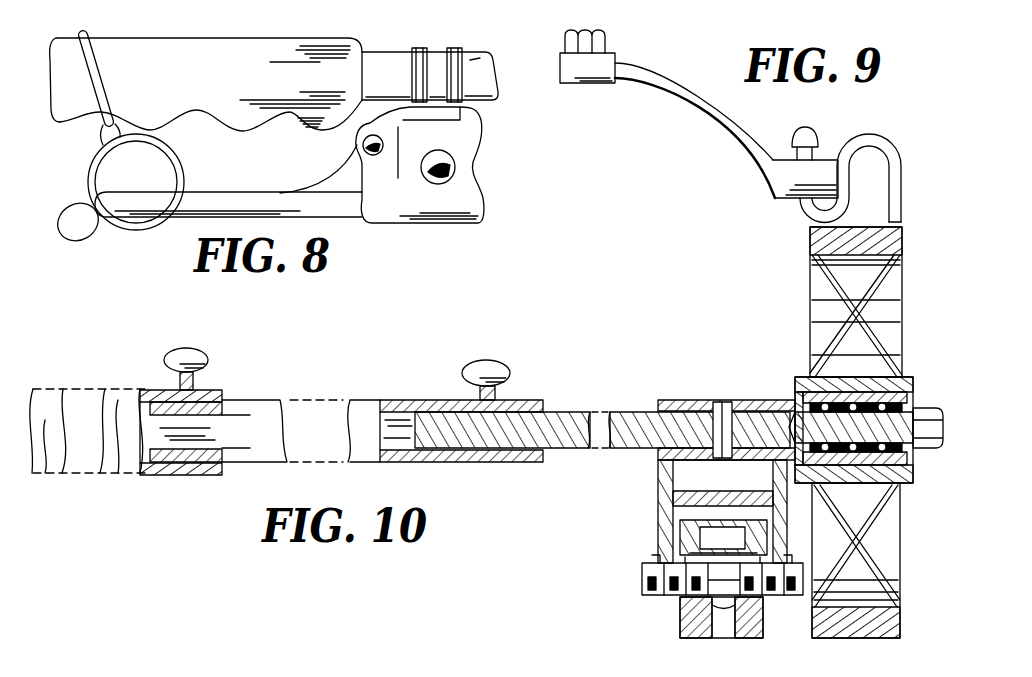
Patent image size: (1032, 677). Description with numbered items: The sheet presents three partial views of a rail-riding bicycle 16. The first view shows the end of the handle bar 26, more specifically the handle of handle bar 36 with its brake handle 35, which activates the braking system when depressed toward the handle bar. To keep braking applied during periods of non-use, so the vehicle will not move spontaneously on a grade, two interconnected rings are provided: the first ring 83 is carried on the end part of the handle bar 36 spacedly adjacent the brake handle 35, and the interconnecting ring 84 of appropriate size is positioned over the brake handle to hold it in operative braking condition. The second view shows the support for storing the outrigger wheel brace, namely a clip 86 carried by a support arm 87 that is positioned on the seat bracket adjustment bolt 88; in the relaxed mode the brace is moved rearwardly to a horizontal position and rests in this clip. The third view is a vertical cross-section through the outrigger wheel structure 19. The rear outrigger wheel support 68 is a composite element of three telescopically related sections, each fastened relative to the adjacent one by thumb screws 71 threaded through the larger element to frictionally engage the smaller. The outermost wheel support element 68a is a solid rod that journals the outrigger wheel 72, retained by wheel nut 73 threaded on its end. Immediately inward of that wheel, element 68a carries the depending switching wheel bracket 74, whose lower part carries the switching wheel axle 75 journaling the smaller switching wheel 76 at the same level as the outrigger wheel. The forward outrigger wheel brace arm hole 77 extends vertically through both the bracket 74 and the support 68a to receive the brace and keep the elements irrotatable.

In FIG. 8, the bicycle 16 is at (392, 50).
In FIG. 8, the handle bar 26 is at (472, 68).
In FIG. 8, the brake handle 35 is at (233, 203).
In FIG. 8, the handle bar 36 is at (250, 97).
In FIG. 8, the first ring 83 is at (95, 68).
In FIG. 8, the interconnecting ring 84 is at (100, 165).
In FIG. 9, the clip 86 is at (890, 157).
In FIG. 9, the support arm 87 is at (728, 110).
In FIG. 9, the seat bracket adjustment bolt 88 is at (585, 44).
In FIG. 10, the outrigger wheel structure 19 is at (779, 395).
In FIG. 10, the rear outrigger wheel support 68 is at (130, 408).
In FIG. 10, the outermost wheel support element 68a is at (632, 432).
In FIG. 10, the thumb screws 71 is at (200, 350).
In FIG. 10, the outrigger wheel 72 is at (813, 253).
In FIG. 10, the wheel nut 73 is at (925, 407).
In FIG. 10, the switching wheel bracket 74 is at (667, 502).
In FIG. 10, the switching wheel axle 75 is at (670, 578).
In FIG. 10, the switching wheel 76 is at (740, 637).
In FIG. 10, the forward outrigger wheel brace arm hole 77 is at (726, 415).